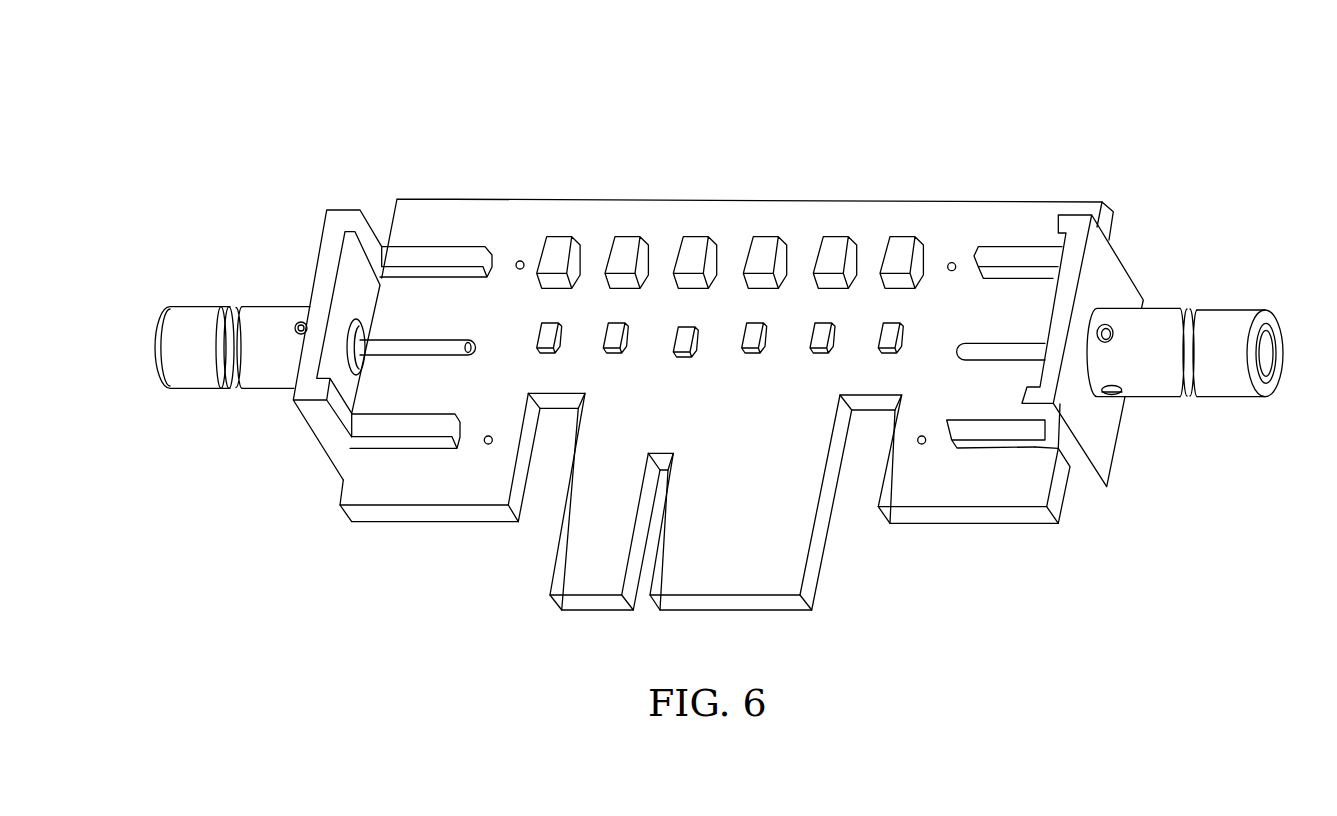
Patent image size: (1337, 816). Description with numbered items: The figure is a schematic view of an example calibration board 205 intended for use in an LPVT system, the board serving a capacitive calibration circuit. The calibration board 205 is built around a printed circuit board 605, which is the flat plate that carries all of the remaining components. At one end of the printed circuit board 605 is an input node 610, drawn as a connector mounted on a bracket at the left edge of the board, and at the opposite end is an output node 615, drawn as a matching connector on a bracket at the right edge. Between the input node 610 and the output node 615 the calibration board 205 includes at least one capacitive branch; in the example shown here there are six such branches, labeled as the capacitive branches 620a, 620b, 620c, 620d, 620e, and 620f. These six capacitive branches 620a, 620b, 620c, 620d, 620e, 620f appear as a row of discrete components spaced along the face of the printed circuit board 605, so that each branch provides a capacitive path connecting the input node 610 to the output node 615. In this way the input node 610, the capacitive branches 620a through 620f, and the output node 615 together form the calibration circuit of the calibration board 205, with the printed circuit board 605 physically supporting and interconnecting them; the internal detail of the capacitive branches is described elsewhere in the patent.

The calibration board 205 is at (256, 62).
The printed circuit board 605 is at (437, 204).
The input node 610 is at (270, 325).
The output node 615 is at (1238, 327).
The capacitive branch 620a is at (553, 236).
The capacitive branch 620b is at (627, 236).
The capacitive branch 620c is at (697, 253).
The capacitive branch 620d is at (768, 246).
The capacitive branch 620e is at (840, 246).
The capacitive branch 620f is at (912, 245).